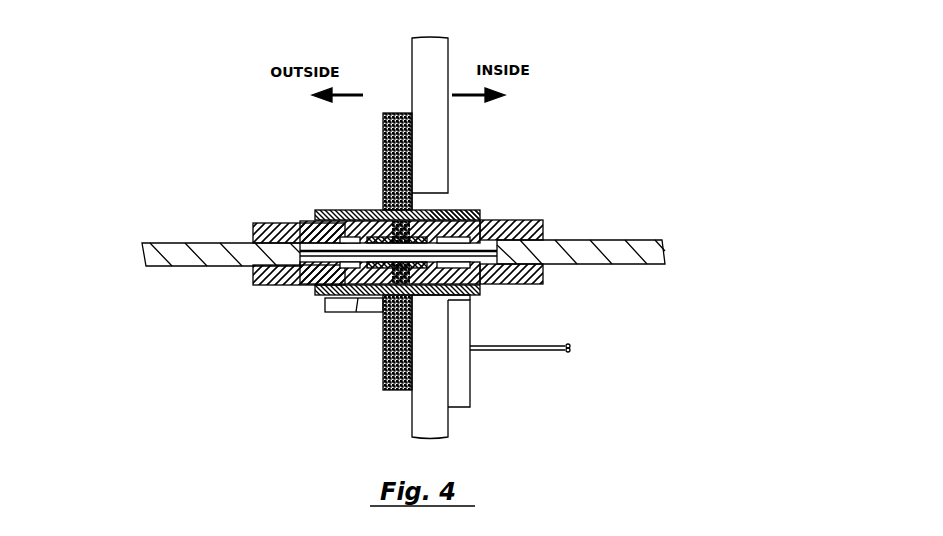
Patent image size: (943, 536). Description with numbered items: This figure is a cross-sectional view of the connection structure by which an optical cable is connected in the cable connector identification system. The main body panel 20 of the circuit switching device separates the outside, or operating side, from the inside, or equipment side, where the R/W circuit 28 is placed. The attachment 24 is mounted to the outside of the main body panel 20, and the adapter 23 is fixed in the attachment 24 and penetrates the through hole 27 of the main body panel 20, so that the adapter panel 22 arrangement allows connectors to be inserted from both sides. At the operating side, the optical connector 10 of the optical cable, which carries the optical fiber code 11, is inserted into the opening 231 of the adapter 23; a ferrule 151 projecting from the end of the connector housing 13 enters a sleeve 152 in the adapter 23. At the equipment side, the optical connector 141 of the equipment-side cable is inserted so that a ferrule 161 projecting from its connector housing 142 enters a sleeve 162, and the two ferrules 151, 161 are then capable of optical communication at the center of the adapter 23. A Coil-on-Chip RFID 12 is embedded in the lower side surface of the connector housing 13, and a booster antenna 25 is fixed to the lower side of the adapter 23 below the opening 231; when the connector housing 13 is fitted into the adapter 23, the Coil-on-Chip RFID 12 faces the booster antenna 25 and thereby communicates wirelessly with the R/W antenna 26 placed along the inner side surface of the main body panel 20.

The optical connector 10 is at (254, 283).
The optical fiber code 11 is at (171, 252).
The Coil-on-Chip RFID 12 is at (364, 302).
The connector housing 13 is at (253, 228).
The main body panel 20 is at (440, 425).
The adapter panel 22 is at (383, 390).
The adapter 23 is at (315, 293).
The attachment 24 is at (393, 113).
The booster antenna 25 is at (336, 306).
The R/W antenna 26 is at (466, 372).
The through hole 27 is at (470, 300).
The R/W circuit 28 is at (580, 348).
The optical connector 141 is at (540, 285).
The connector housing 142 is at (545, 233).
The ferrule 151 is at (340, 236).
The sleeve 152 is at (385, 240).
The ferrule 161 is at (493, 215).
The sleeve 162 is at (442, 210).
The opening 231 is at (314, 213).